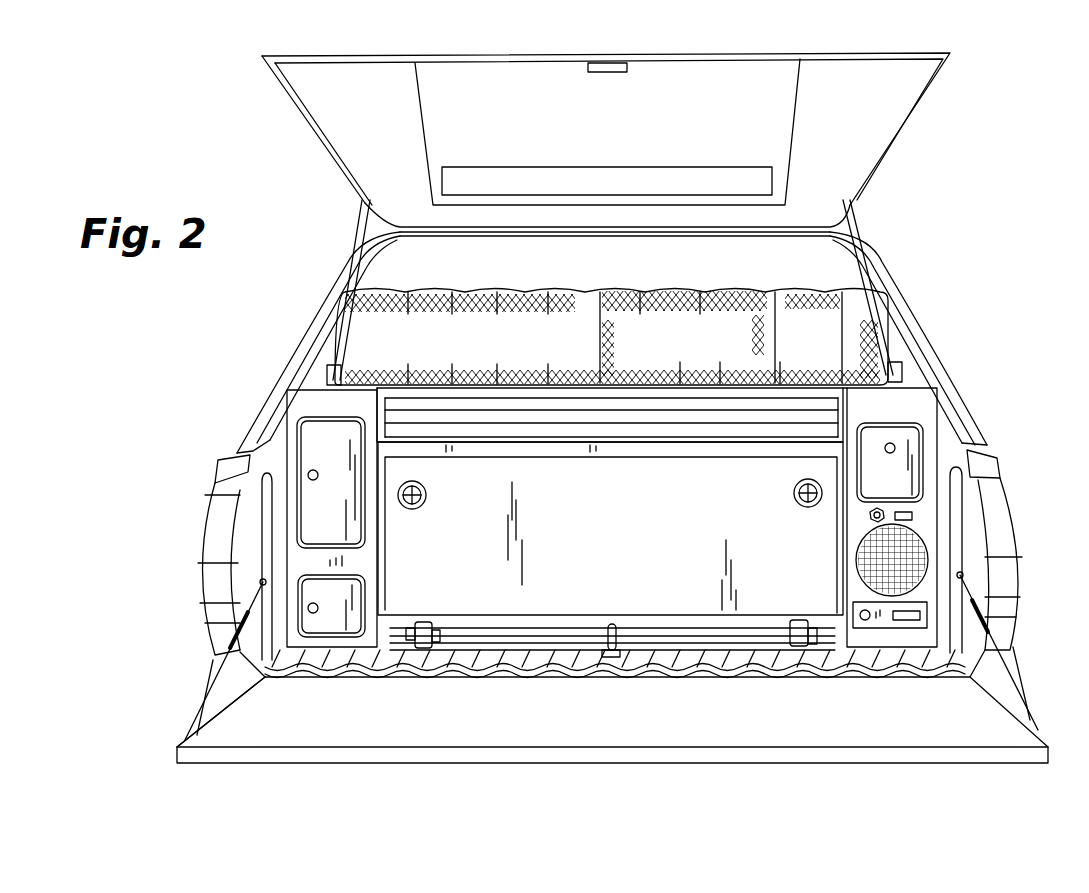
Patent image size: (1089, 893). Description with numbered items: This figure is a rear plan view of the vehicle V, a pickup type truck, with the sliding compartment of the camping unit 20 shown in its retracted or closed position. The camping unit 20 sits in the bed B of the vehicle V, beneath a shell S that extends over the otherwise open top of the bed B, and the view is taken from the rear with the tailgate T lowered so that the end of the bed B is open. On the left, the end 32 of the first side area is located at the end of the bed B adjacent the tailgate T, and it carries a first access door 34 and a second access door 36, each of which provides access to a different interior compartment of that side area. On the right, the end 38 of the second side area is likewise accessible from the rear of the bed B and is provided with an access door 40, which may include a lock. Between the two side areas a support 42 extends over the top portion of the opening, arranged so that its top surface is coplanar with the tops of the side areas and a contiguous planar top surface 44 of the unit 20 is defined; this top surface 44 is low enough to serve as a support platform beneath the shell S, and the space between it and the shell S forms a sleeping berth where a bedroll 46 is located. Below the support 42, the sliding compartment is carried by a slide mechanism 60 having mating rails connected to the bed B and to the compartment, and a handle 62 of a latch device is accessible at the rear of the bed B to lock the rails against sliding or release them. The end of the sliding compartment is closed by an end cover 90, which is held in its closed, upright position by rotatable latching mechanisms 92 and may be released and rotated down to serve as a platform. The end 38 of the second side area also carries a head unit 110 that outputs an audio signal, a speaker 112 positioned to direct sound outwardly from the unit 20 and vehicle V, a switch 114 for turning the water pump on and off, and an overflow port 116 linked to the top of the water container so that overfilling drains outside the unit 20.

The camping unit 20 is at (998, 394).
The end of the first side area 32 is at (297, 560).
The first access door 34 is at (310, 437).
The second access door 36 is at (300, 628).
The end of the second side area 38 is at (917, 403).
The access door 40 is at (908, 445).
The support 42 is at (393, 393).
The top surface 44 is at (905, 378).
The bedroll 46 is at (853, 292).
The slide mechanism 60 is at (755, 642).
The handle 62 is at (622, 652).
The end cover 90 is at (472, 598).
The latching mechanisms 92 is at (424, 505).
The head unit 110 is at (925, 610).
The speaker 112 is at (920, 553).
The switch 114 is at (912, 516).
The overflow port 116 is at (884, 514).
The shell S is at (340, 262).
The vehicle V is at (905, 227).
The tailgate T is at (290, 737).
The bed B is at (383, 662).